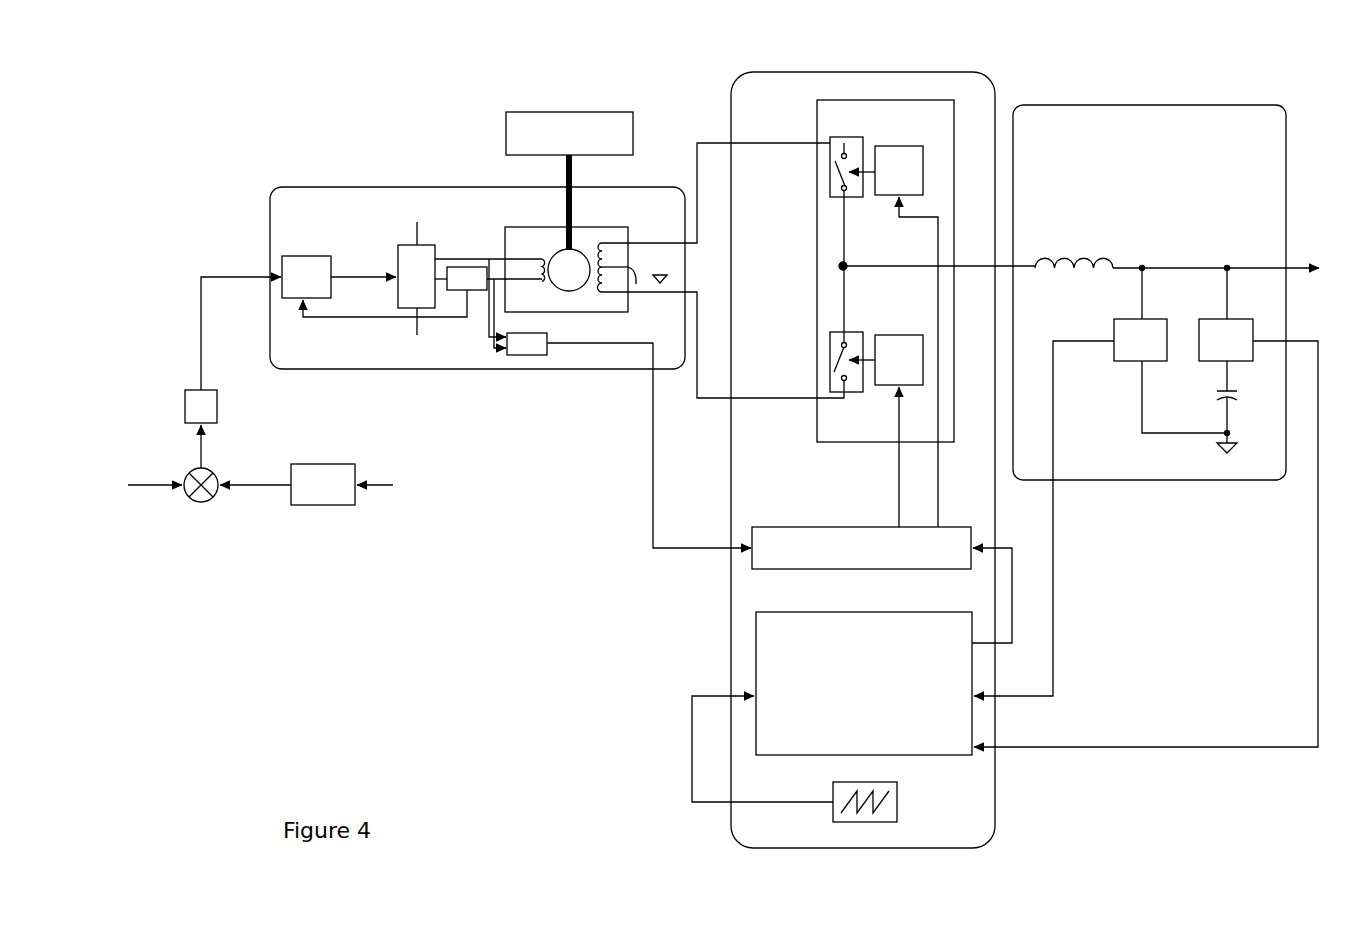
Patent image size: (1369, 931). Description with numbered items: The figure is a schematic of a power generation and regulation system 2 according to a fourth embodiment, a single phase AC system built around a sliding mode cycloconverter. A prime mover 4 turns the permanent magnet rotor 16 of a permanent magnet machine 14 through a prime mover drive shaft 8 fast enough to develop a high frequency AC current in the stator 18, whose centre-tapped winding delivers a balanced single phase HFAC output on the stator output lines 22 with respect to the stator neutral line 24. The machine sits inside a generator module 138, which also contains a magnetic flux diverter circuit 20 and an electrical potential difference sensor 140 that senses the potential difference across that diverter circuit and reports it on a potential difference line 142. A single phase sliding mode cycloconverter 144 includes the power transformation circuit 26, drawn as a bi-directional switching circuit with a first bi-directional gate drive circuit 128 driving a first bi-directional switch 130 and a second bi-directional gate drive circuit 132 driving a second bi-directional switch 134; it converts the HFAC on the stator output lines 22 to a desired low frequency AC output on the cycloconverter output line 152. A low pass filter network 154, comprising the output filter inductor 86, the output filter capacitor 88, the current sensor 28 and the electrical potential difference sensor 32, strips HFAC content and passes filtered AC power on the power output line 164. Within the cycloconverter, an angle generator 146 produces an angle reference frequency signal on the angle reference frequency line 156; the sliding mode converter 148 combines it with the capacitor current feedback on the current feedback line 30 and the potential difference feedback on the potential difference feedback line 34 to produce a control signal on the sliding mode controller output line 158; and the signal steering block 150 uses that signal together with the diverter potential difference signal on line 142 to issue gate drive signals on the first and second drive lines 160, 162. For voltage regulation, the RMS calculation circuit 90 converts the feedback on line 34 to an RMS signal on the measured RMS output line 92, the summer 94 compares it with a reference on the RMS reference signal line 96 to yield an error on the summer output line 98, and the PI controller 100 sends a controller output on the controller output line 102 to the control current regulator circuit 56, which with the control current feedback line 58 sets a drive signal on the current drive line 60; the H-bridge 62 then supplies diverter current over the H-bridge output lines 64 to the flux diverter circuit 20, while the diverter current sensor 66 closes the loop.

The power generation and regulation system 2 is at (325, 135).
The prime mover 4 is at (569, 133).
The prime mover drive shaft 8 is at (575, 201).
The permanent magnet machine 14 is at (510, 226).
The permanent magnet rotor 16 is at (569, 270).
The stator 18 is at (601, 291).
The magnetic flux diverter circuit 20 is at (540, 284).
The stator output lines 22 is at (636, 243).
The stator neutral line 24 is at (634, 278).
The power transformation circuit 26 is at (816, 283).
The current sensor 28 is at (1226, 314).
The current feedback line 30 is at (1318, 517).
The electrical potential difference sensor 32 is at (1170, 350).
The potential difference feedback line 34 is at (385, 485).
The control current regulator circuit 56 is at (306, 277).
The control current feedback line 58 is at (330, 318).
The magnetic flux diverter circuit current drive line 60 is at (392, 283).
The H-bridge 62 is at (398, 265).
The H-bridge output lines 64 is at (478, 258).
The magnetic flux diverter circuit current sensor 66 is at (467, 279).
The output filter inductor 86 is at (1083, 258).
The output filter capacitor 88 is at (1222, 396).
The root-mean-square calculation circuit 90 is at (323, 484).
The measured RMS output line 92 is at (244, 488).
The summer 94 is at (203, 501).
The RMS electrical potential difference reference signal line 96 is at (147, 487).
The summer output line 98 is at (200, 458).
The proportional-plus-integral controller 100 is at (217, 405).
The controller output line 102 is at (202, 332).
The first bi-directional gate drive circuit 128 is at (893, 336).
The first bi-directional switch 130 is at (830, 172).
The second bi-directional gate drive circuit 132 is at (886, 431).
The second bi-directional switch 134 is at (830, 340).
The generator module 138 is at (381, 185).
The electrical potential difference sensor 140 is at (523, 356).
The magnetic flux diverter circuit potential difference line 142 is at (653, 410).
The single phase sliding mode cycloconverter 144 is at (855, 72).
The angle generator 146 is at (897, 797).
The sliding mode converter 148 is at (864, 683).
The signal steering block 150 is at (861, 548).
The cycloconverter output line 152 is at (1005, 266).
The low pass filter network 154 is at (1218, 105).
The angle reference frequency line 156 is at (757, 802).
The sliding mode controller output line 158 is at (1015, 570).
The steering block first drive line 160 is at (940, 460).
The steering block second drive line 162 is at (895, 460).
The power output line 164 is at (1290, 266).